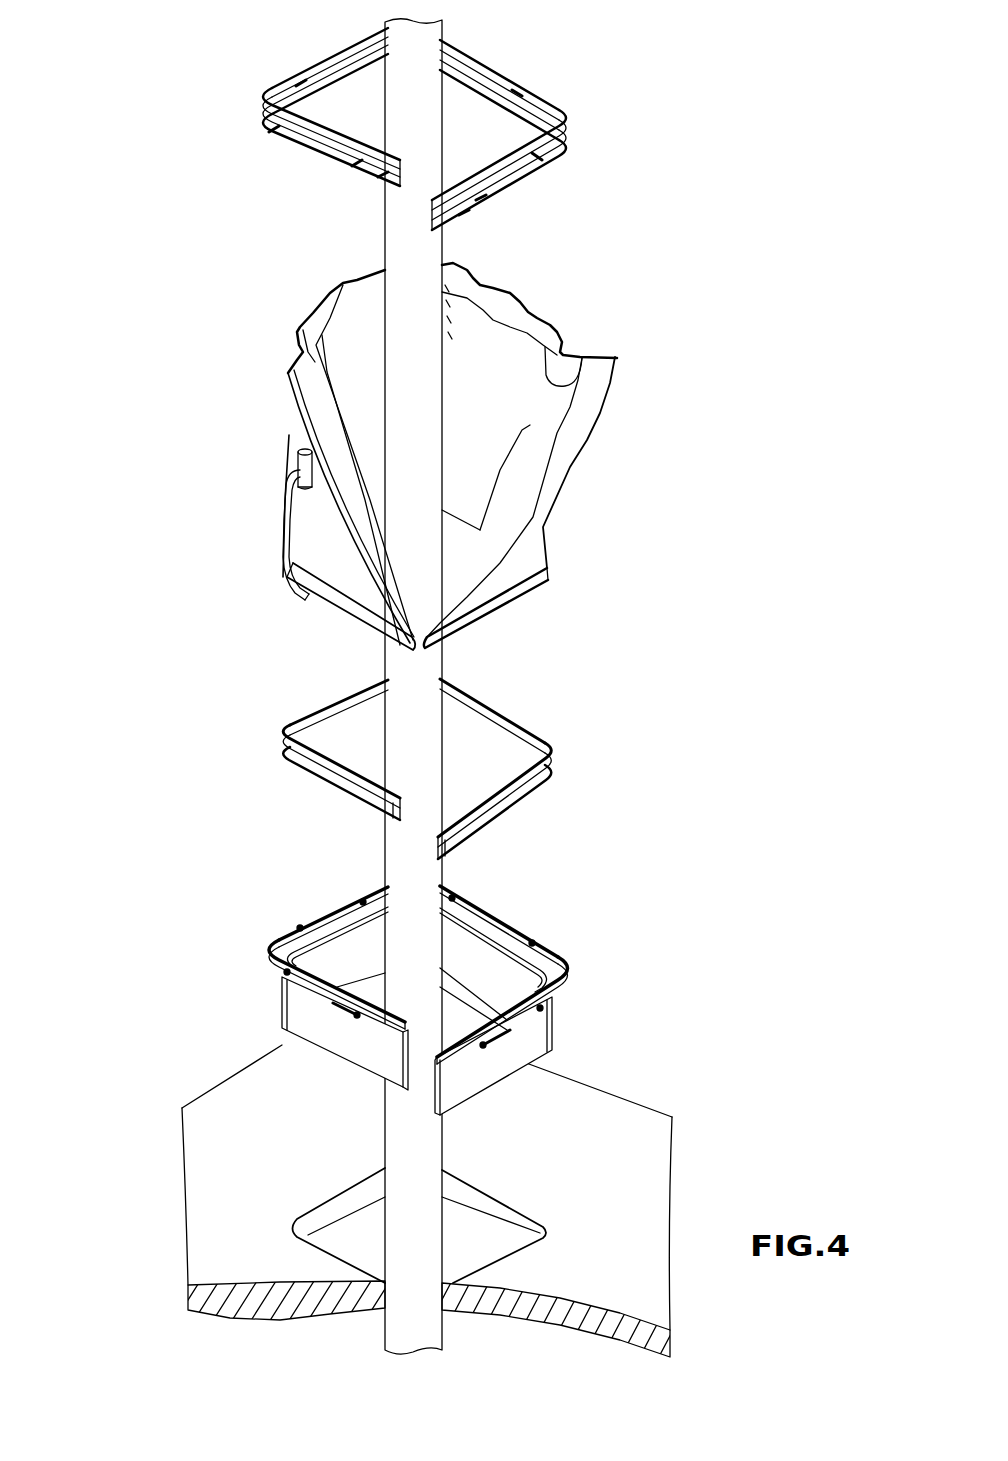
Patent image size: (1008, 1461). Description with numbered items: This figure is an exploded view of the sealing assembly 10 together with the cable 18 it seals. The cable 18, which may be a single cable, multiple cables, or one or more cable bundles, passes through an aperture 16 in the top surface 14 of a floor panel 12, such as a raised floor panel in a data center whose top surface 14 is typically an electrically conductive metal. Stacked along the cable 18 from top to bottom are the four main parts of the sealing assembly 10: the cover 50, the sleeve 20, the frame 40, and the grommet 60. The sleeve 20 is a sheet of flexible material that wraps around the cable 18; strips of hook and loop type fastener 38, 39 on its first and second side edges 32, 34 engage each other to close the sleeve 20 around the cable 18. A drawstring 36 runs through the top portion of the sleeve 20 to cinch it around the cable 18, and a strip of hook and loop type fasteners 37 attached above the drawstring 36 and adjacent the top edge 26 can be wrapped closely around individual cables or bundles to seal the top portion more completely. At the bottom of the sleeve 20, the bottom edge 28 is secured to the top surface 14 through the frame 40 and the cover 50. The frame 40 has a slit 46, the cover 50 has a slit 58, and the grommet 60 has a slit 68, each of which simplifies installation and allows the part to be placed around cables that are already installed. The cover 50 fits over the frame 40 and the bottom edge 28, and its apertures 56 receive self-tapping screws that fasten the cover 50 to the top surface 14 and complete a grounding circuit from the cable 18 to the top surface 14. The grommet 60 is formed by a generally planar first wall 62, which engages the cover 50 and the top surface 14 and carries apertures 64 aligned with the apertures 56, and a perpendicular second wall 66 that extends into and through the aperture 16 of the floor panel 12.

The sealing assembly 10 is at (200, 470).
The floor panel 12 is at (195, 1090).
The top surface 14 is at (633, 1158).
The aperture 16 is at (352, 1233).
The cable 18 is at (428, 1320).
The sleeve 20 is at (438, 449).
The top edge 26 is at (322, 303).
The bottom edge 28 is at (525, 606).
The first side edge 32 is at (287, 383).
The second side edge 34 is at (603, 413).
The drawstring 36 is at (285, 545).
The strip of hook and loop type fasteners 37 is at (503, 300).
The strip of hook and loop type fastener 38 is at (312, 410).
The strip of hook and loop type fastener 39 is at (603, 377).
The frame 40 is at (292, 709).
The slit 46 is at (412, 830).
The cover 50 is at (302, 56).
The apertures 56 is at (257, 115).
The slit 58 is at (410, 198).
The grommet 60 is at (421, 957).
The first wall 62 is at (327, 917).
The apertures 64 is at (363, 902).
The second wall 66 is at (510, 1052).
The slit 68 is at (414, 1102).